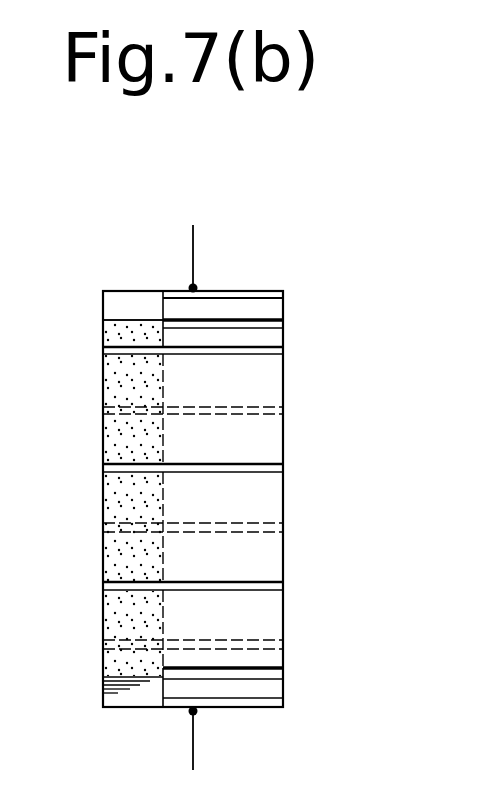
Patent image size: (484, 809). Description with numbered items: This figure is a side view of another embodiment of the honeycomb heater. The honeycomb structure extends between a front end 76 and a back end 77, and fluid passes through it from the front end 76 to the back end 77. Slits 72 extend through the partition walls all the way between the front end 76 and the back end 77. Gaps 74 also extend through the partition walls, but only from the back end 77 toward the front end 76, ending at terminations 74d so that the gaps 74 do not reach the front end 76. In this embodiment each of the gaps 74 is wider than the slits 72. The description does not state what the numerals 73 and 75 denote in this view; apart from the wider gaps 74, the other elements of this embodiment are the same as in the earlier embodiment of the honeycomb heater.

The slits 72 is at (283, 584).
The porous ceramic layer 73 is at (123, 443).
The gaps 74 is at (283, 307).
The terminations 74d is at (163, 668).
The lead wire 75 is at (193, 255).
The front end 76 is at (103, 502).
The back end 77 is at (283, 447).